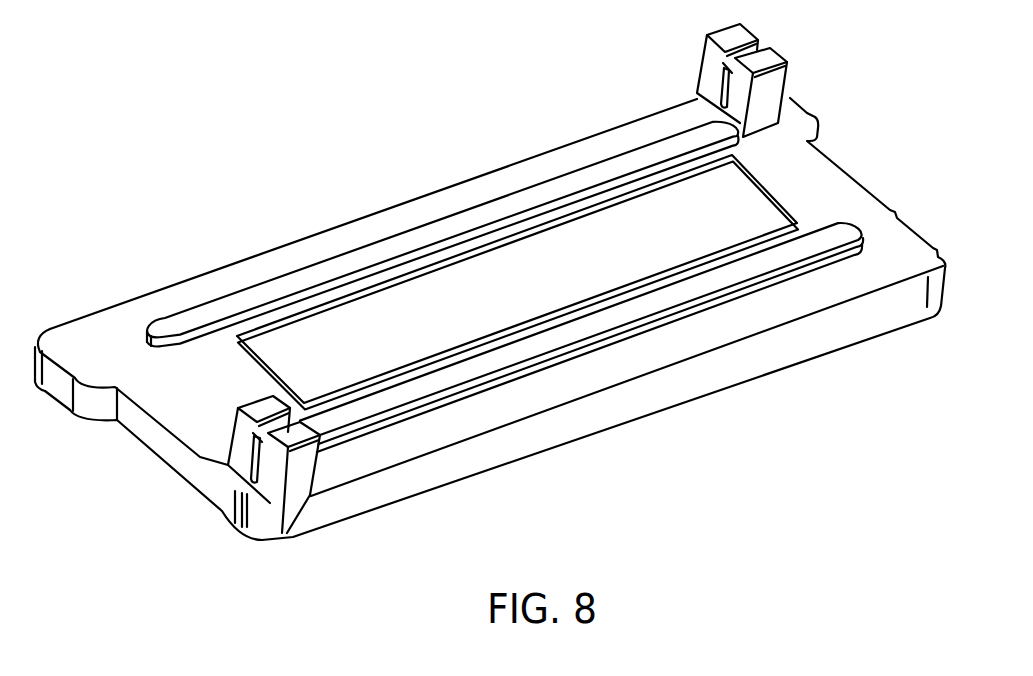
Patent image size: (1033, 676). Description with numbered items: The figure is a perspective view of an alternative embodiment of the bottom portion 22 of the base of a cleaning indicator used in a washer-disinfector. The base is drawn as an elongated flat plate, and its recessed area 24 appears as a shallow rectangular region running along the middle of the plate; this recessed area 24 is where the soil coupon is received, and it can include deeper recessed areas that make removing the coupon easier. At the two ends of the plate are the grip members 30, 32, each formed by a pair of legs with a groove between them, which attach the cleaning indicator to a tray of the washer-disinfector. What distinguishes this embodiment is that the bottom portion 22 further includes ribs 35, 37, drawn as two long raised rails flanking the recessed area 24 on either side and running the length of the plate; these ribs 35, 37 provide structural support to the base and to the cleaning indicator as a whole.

The bottom portion 22 is at (92, 338).
The recessed area 24 is at (633, 233).
The grip member 30 is at (272, 467).
The grip member 32 is at (710, 62).
The rib 35 is at (389, 245).
The rib 37 is at (622, 310).